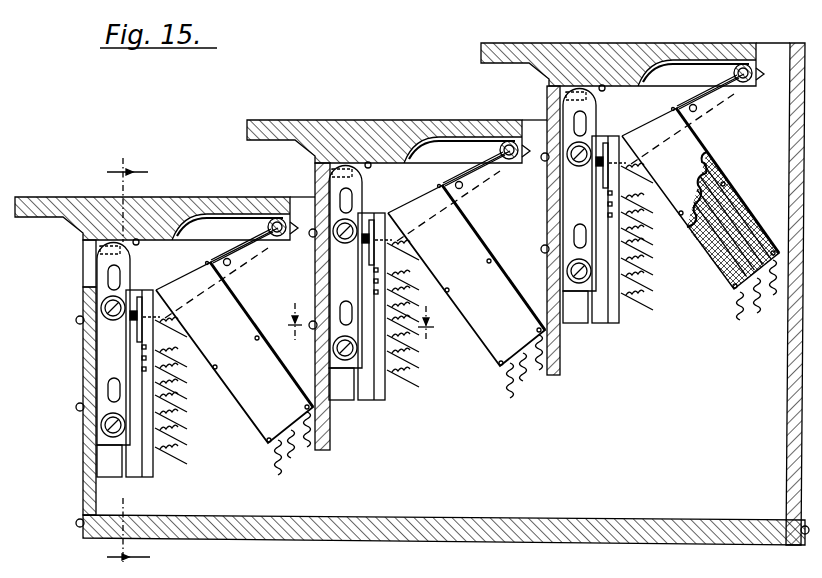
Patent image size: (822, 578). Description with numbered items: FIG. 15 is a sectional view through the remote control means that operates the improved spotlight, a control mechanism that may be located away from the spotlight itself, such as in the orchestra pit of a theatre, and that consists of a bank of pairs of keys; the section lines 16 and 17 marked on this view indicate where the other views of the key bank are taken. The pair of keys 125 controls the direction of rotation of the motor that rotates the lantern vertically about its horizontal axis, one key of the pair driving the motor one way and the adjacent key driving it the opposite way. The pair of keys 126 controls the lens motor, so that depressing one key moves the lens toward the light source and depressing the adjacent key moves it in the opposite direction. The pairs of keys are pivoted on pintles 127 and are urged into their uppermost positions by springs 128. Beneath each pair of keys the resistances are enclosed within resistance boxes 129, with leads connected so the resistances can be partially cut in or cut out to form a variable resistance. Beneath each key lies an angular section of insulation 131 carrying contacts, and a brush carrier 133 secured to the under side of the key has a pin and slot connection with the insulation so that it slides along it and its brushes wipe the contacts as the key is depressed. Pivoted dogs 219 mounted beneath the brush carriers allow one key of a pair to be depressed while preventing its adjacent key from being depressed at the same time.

The section line 16- 16 is at (140, 363).
The section line 17- 17 is at (356, 314).
The pair of keys 125 is at (397, 124).
The pair of keys 126 is at (635, 51).
The pintle 127 is at (257, 253).
The spring 128 is at (231, 217).
The resistance box 129 is at (258, 418).
The angular section of insulation 131 is at (346, 404).
The brush carrier 133 is at (382, 355).
The pivoted dog 219 is at (381, 319).